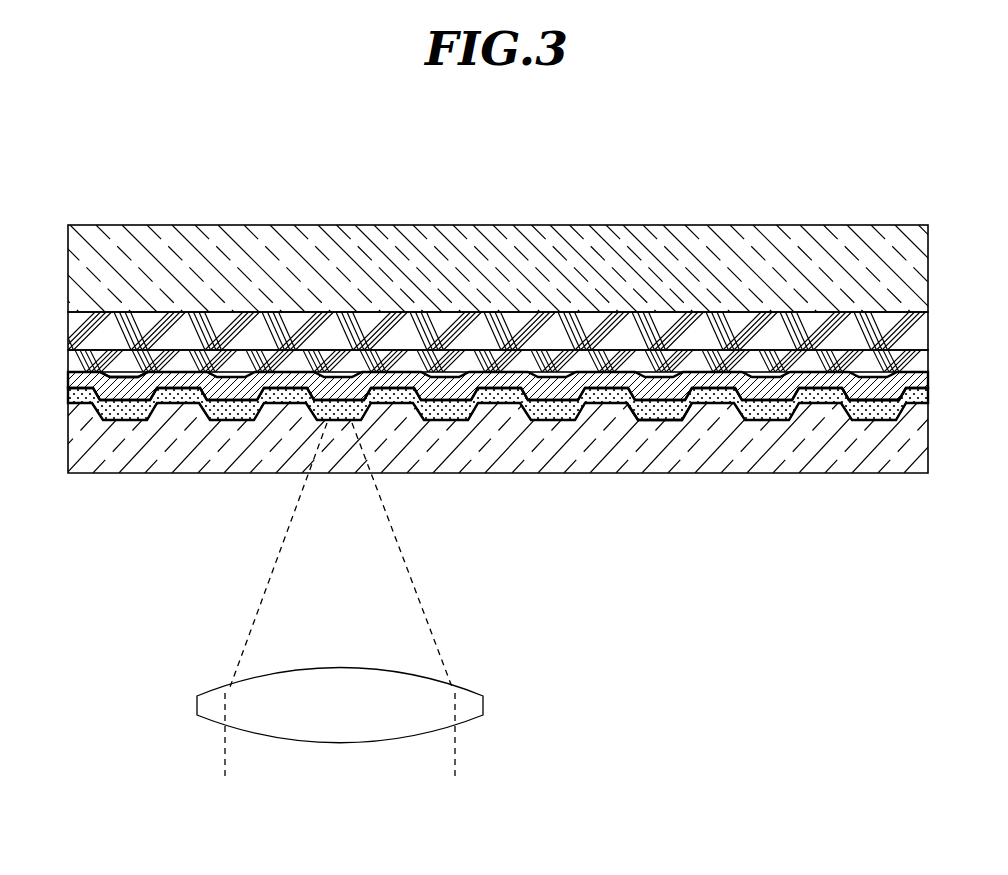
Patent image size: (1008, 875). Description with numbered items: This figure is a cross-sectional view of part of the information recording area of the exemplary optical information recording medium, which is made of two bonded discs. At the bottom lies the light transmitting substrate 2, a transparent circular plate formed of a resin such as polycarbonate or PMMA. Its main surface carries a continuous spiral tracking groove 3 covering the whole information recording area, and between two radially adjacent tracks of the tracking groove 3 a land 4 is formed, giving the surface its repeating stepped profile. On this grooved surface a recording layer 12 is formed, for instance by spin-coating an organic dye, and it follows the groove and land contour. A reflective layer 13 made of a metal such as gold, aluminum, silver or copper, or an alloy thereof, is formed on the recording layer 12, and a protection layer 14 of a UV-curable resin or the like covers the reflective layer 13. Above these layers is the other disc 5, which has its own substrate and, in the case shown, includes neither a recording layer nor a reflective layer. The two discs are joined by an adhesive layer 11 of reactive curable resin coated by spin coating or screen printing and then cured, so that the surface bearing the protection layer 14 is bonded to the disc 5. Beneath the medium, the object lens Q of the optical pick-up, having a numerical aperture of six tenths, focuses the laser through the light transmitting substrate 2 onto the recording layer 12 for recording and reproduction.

The light transmitting substrate 2 is at (557, 473).
The tracking groove 3 is at (452, 423).
The land 4 is at (712, 407).
The disc 5 is at (462, 245).
The adhesive layer 11 is at (185, 330).
The recording layer 12 is at (658, 412).
The reflective layer 13 is at (875, 395).
The protection layer 14 is at (122, 373).
The object lens Q is at (483, 705).